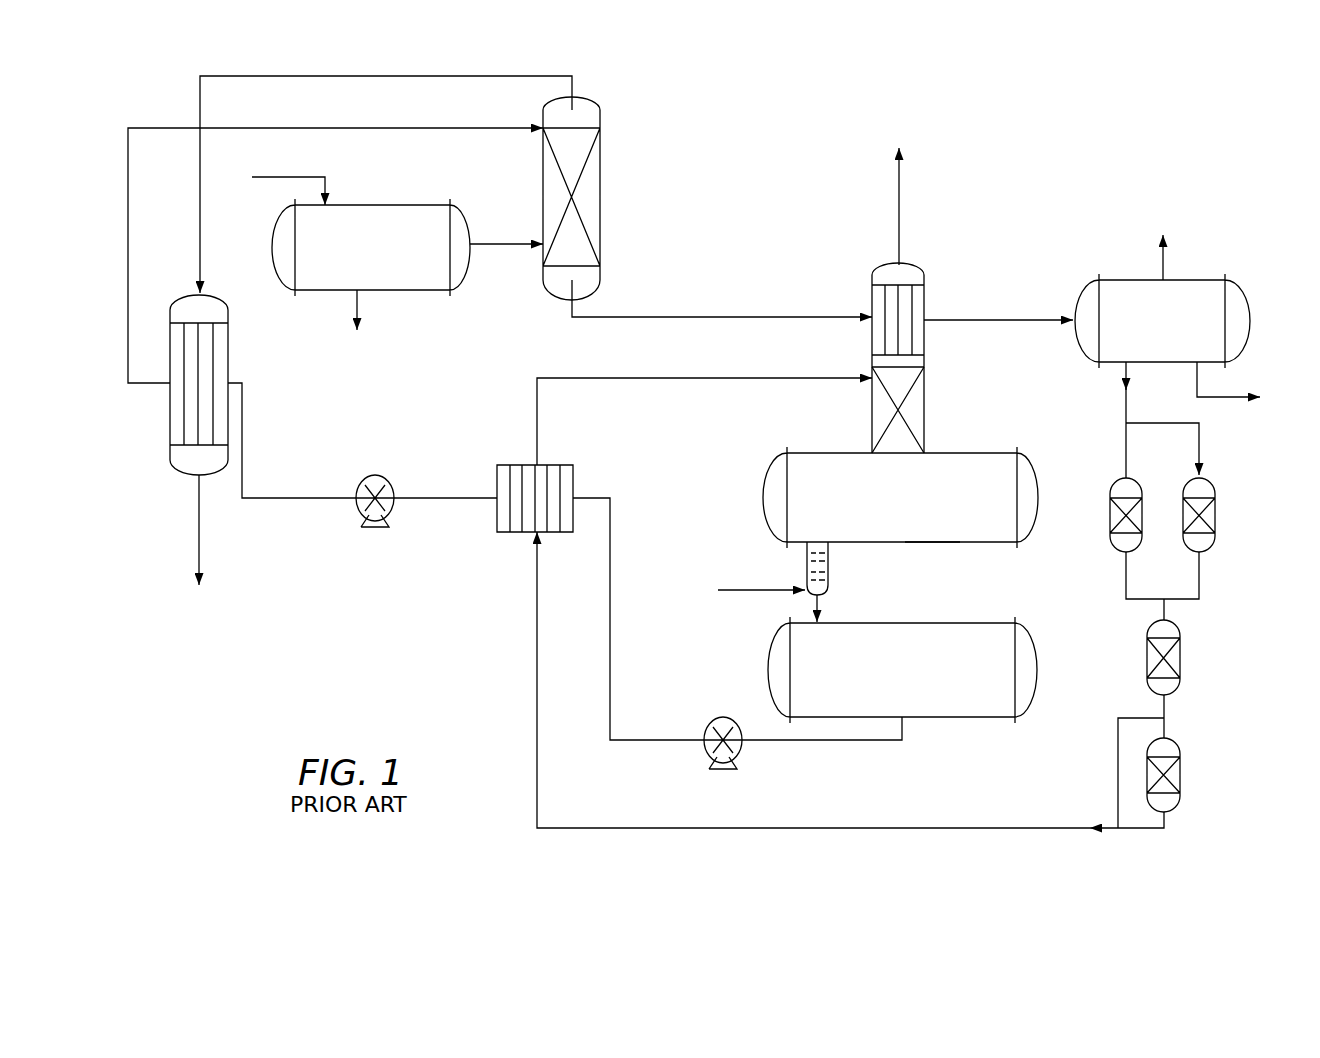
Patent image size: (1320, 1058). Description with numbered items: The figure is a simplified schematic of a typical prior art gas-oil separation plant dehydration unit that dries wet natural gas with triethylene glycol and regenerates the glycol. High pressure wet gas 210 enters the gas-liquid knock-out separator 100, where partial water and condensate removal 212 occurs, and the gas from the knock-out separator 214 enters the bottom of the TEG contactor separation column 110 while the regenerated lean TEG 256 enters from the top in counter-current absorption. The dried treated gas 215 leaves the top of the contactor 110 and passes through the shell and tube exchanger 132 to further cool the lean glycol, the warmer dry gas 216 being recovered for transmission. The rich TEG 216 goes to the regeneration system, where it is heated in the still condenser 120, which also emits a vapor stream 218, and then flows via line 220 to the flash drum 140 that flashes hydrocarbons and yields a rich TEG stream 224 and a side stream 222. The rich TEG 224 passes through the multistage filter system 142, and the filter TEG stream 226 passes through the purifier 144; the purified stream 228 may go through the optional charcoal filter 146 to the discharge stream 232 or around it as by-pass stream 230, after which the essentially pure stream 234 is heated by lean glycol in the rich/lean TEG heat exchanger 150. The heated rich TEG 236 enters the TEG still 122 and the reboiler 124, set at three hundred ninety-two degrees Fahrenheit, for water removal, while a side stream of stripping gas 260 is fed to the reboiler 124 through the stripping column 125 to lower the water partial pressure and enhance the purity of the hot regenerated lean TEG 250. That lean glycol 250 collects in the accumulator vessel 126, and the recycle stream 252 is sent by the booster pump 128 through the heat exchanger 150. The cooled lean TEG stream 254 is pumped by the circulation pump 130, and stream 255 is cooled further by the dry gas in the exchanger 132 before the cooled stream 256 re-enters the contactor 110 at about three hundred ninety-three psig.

The gas-liquid knock-out separator 100 is at (358, 257).
The TEG contactor separation column 110 is at (601, 165).
The still condenser 120 is at (872, 295).
The TEG still 122 is at (880, 405).
The reboiler 124 is at (879, 511).
The stripping column 125 is at (930, 543).
The accumulator vessel 126 is at (876, 681).
The booster pump 128 is at (728, 718).
The circulation pump 130 is at (385, 478).
The shell and tube exchanger 132 is at (213, 350).
The flash drum 140 is at (1144, 331).
The filter system 142 is at (1144, 584).
The purifier 144 is at (1180, 630).
The charcoal filter 146 is at (1180, 753).
The rich/lean TEG heat exchanger 150 is at (560, 465).
The high pressure wet gas 210 is at (325, 177).
The water and condensate removal 212 is at (358, 306).
The gas from the gas-liquid knock-out separator 214 is at (497, 246).
The dried treated gas 215 is at (315, 78).
The rich TEG 216 is at (198, 545).
The vapor stream 218 is at (899, 190).
The line 220 is at (948, 322).
The side stream 222 is at (1228, 397).
The rich TEG stream 224 is at (1126, 455).
The filter TEG stream 226 is at (1126, 590).
The purified stream 228 is at (1164, 716).
The by-pass stream 230 is at (1118, 765).
The discharge stream 232 is at (1164, 825).
The essentially pure stream 234 is at (893, 830).
The heated rich TEG 236 is at (740, 380).
The hot regenerated lean TEG 250 is at (820, 606).
The recycle stream 252 is at (905, 725).
The cooled lean TEG stream 254 is at (425, 506).
The stream 255 is at (244, 465).
The regenerated lean TEG 256 is at (477, 130).
The stripping gas 260 is at (762, 591).